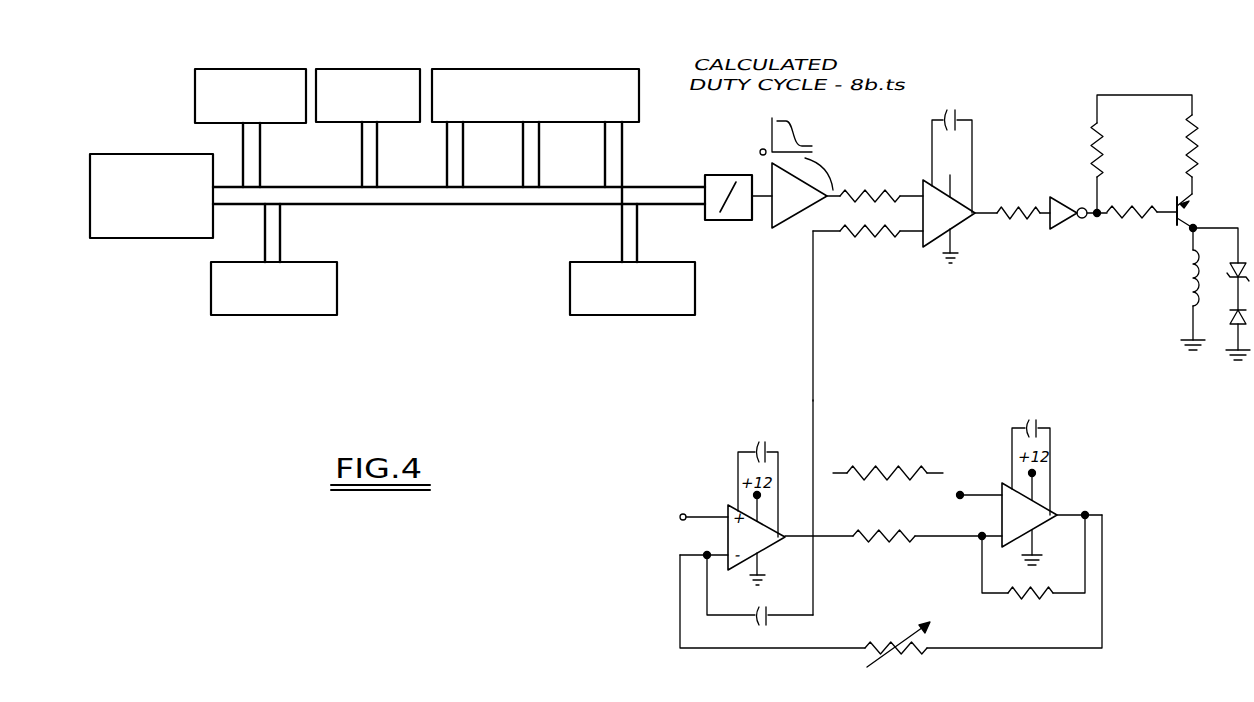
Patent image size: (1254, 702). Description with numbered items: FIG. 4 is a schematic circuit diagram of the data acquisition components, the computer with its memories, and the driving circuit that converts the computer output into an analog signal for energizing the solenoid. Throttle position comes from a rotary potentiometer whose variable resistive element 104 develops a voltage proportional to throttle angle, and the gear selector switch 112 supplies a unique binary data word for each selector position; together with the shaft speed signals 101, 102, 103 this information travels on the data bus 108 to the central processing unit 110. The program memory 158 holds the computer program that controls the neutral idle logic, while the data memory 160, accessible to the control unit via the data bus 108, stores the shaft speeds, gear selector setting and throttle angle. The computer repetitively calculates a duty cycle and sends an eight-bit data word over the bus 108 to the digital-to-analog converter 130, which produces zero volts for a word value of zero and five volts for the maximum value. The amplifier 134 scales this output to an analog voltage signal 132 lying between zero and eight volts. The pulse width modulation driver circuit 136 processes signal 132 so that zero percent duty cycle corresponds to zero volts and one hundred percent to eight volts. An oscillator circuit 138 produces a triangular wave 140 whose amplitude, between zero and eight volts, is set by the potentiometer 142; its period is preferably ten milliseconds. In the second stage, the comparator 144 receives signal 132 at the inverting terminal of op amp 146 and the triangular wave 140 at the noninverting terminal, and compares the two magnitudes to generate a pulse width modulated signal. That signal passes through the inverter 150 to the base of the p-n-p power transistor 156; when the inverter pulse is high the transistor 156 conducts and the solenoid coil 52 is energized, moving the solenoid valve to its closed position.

The solenoid coil 52 is at (1183, 293).
The shaft speed signal 101 is at (551, 149).
The shaft speed signal 102 is at (551, 149).
The shaft speed signal 103 is at (593, 57).
The variable resistive element 104 is at (255, 68).
The data bus 108 is at (246, 207).
The central processing unit 110 is at (158, 238).
The gear selector switch 112 is at (360, 66).
The digital-to-analog converter 130 is at (728, 162).
The analog voltage signal 132 is at (798, 133).
The amplifier 134 is at (790, 221).
The pulse width modulation driver circuit 136 is at (1068, 293).
The oscillator circuit 138 is at (930, 402).
The triangular wave 140 is at (877, 458).
The potentiometer 142 is at (893, 657).
The comparator 144 is at (983, 168).
The op amp 146 is at (963, 227).
The inverter 150 is at (1065, 223).
The p-n-p power transistor 156 is at (1176, 223).
The program memory 158 is at (277, 315).
The data memory 160 is at (620, 315).